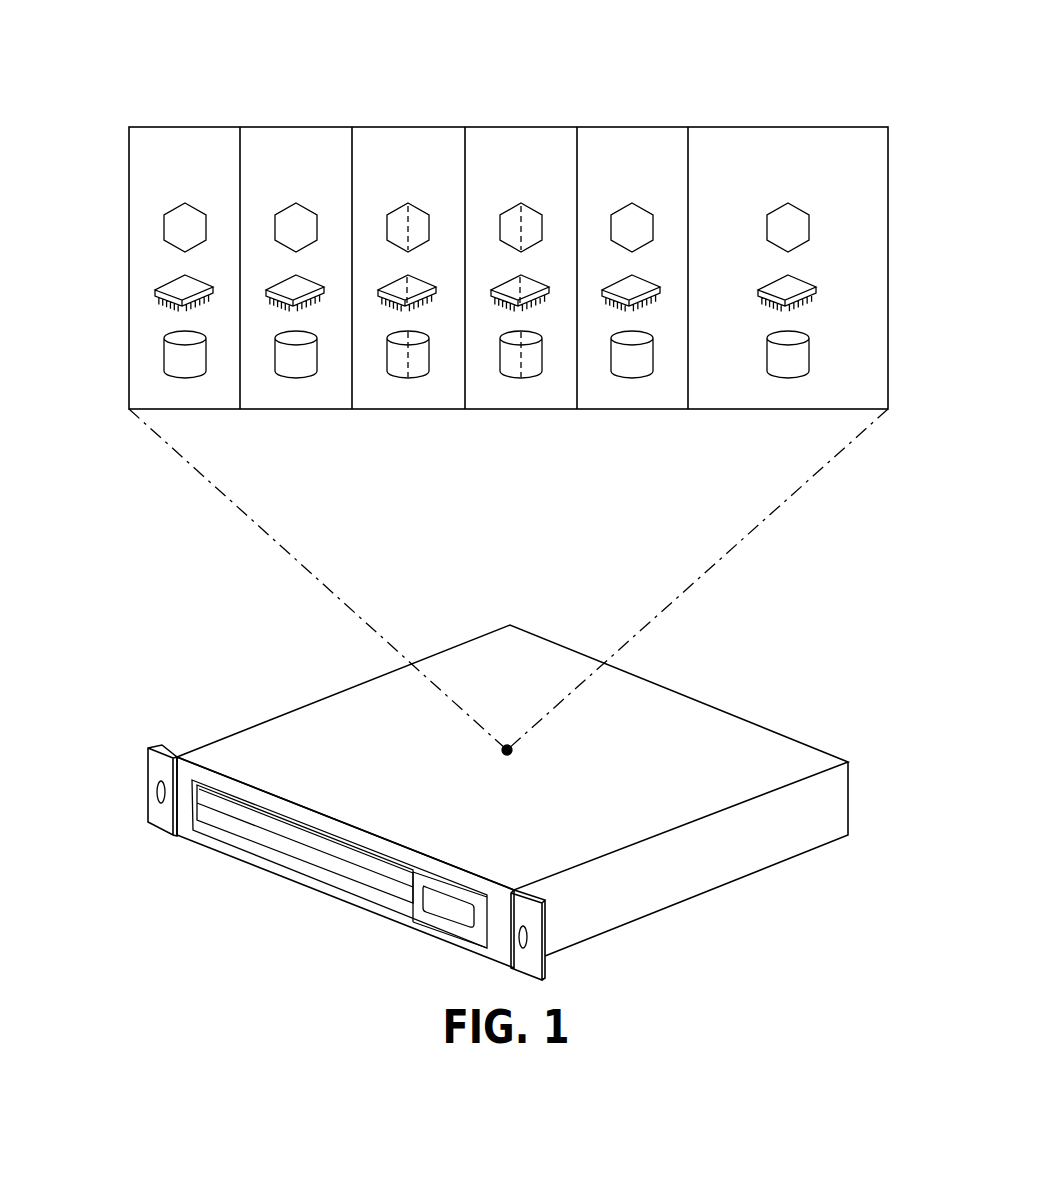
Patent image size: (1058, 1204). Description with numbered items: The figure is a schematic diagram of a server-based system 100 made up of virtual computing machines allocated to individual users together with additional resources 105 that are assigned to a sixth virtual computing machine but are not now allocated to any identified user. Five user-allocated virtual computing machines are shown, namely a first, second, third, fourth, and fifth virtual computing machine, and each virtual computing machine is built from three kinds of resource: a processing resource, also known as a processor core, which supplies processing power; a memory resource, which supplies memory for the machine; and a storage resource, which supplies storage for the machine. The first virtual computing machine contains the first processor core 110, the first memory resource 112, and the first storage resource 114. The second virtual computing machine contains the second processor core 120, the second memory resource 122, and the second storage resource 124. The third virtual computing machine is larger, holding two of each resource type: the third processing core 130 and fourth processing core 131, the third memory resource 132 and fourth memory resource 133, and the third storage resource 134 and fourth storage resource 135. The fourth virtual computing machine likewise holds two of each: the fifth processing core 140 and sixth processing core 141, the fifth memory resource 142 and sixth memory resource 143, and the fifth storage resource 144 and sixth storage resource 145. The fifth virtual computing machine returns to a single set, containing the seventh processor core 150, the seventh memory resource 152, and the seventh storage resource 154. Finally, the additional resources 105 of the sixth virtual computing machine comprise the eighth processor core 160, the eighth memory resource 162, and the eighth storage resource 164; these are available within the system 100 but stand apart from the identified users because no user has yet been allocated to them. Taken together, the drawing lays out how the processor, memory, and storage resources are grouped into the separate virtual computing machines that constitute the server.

The system 100 is at (740, 745).
The additional resources 105 is at (790, 127).
The first processor core 110 is at (164, 228).
The first memory resource 112 is at (175, 290).
The first storage resource 114 is at (167, 355).
The second processor core 120 is at (283, 225).
The second memory resource 122 is at (273, 302).
The second storage resource 124 is at (303, 373).
The third processing core 130 is at (422, 225).
The fourth processing core 131 is at (395, 225).
The third memory resource 132 is at (432, 290).
The fourth memory resource 133 is at (385, 298).
The third storage resource 134 is at (418, 376).
The fourth storage resource 135 is at (393, 376).
The fifth processing core 140 is at (533, 225).
The sixth processing core 141 is at (508, 225).
The fifth memory resource 142 is at (545, 290).
The sixth memory resource 143 is at (497, 298).
The fifth storage resource 144 is at (530, 376).
The sixth storage resource 145 is at (505, 376).
The seventh processor core 150 is at (643, 225).
The seventh memory resource 152 is at (655, 290).
The seventh storage resource 154 is at (622, 374).
The eighth processor core 160 is at (795, 226).
The eighth memory resource 162 is at (797, 283).
The eighth storage resource 164 is at (795, 357).